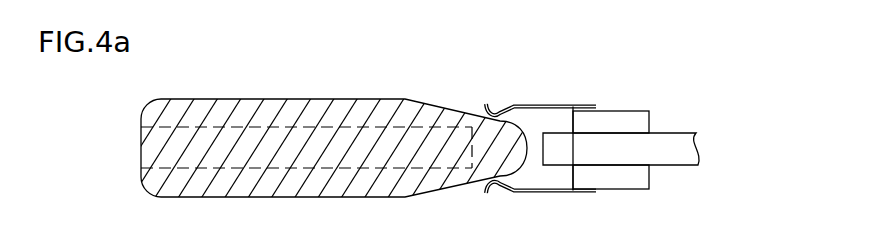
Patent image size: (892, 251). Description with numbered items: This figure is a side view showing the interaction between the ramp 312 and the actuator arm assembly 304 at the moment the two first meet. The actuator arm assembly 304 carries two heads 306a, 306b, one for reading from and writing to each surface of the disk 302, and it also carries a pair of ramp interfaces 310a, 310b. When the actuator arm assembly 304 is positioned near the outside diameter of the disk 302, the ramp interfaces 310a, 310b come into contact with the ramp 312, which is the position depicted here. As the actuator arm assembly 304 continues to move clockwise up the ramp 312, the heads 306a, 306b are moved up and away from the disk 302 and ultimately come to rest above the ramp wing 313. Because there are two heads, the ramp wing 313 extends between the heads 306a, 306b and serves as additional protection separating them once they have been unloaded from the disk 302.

The disk 302 is at (681, 154).
The actuator arm assembly 304 is at (631, 72).
The head 306a is at (632, 118).
The head 306b is at (625, 177).
The ramp interface 310a is at (552, 103).
The ramp interface 310b is at (542, 193).
The ramp 312 is at (445, 108).
The ramp wing 313 is at (137, 142).